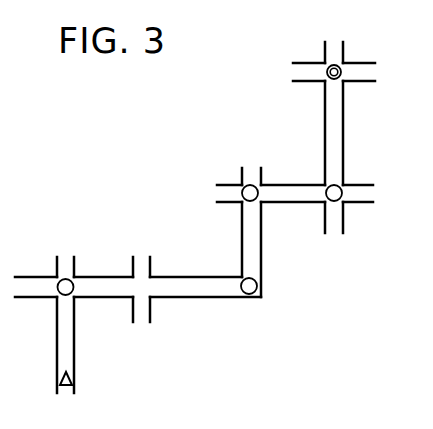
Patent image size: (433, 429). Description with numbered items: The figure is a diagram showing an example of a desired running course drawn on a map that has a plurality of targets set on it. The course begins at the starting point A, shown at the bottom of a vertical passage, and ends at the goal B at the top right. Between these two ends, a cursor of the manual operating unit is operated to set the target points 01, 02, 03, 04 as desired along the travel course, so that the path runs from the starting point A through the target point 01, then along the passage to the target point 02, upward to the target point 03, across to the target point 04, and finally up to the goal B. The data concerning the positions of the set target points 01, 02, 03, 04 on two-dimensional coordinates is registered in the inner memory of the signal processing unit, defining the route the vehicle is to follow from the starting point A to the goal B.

The target point 01 is at (70, 293).
The target point 02 is at (257, 284).
The target point 03 is at (253, 186).
The target point 04 is at (341, 189).
The starting point A is at (60, 378).
The goal B is at (341, 70).